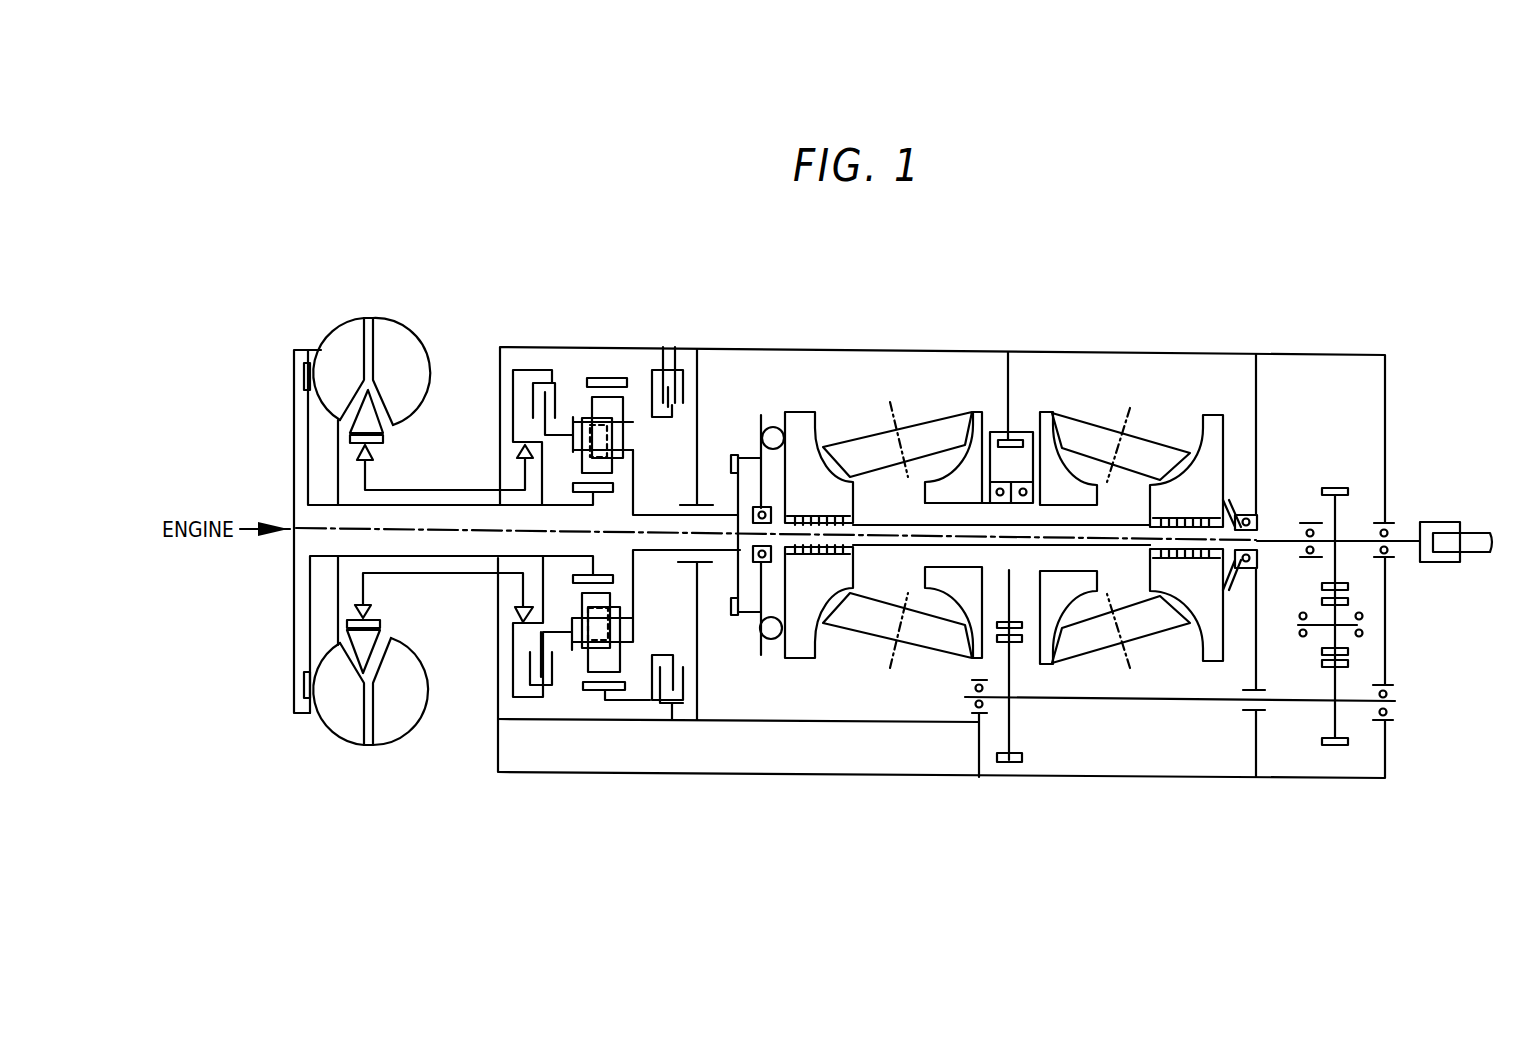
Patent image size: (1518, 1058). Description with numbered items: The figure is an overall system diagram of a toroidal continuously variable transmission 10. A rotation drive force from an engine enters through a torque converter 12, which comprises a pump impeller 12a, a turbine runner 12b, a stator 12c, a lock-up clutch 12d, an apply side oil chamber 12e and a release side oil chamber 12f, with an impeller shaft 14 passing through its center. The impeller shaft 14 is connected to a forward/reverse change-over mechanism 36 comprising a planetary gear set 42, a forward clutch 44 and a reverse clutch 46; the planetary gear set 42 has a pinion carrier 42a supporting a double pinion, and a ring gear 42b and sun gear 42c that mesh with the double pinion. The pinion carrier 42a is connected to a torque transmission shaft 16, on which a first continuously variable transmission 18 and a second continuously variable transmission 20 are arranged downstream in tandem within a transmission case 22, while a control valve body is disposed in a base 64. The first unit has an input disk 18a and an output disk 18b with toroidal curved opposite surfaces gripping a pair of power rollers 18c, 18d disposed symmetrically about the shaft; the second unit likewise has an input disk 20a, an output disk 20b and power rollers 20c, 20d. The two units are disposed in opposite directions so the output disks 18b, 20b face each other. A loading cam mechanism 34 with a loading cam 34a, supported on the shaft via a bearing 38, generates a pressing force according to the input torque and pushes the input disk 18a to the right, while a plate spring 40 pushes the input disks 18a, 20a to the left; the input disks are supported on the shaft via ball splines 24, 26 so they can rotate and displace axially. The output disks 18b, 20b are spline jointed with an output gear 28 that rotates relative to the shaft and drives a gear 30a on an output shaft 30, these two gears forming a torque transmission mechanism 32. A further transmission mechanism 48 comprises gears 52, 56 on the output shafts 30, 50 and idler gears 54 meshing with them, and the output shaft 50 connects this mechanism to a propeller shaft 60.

The toroidal continuously variable transmission 10 is at (977, 333).
The torque converter 12 is at (355, 305).
The pump impeller 12a is at (402, 353).
The turbine runner 12b is at (347, 350).
The stator 12c is at (377, 426).
The lock-up clutch 12d is at (308, 415).
The apply side oil chamber 12e is at (323, 630).
The release side oil chamber 12f is at (293, 458).
The impeller shaft 14 is at (462, 558).
The torque transmission shaft 16 is at (895, 555).
The first continuously variable transmission 18 is at (825, 400).
The input disk 18a is at (802, 408).
The output disk 18b is at (976, 410).
The power roller 18c is at (936, 418).
The power roller 18d is at (938, 662).
The second continuously variable transmission 20 is at (1118, 388).
The input disk 20a is at (1223, 420).
The output disk 20b is at (1046, 410).
The power roller 20c is at (1150, 420).
The power roller 20d is at (1083, 653).
The transmission case 22 is at (697, 722).
The ball spline 24 is at (848, 590).
The ball spline 26 is at (1143, 560).
The output gear 28 is at (998, 430).
The output shaft 30 is at (1220, 703).
The gear 30a is at (1005, 763).
The torque transmission mechanism 32 is at (1025, 665).
The loading cam mechanism 34 is at (734, 435).
The loading cam 34a is at (757, 432).
The forward/reverse change-over mechanism 36 is at (566, 380).
The bearing 38 is at (758, 615).
The plate spring 40 is at (1230, 510).
The planetary gear set 42 is at (626, 565).
The pinion carrier 42a is at (629, 637).
The ring gear 42b is at (598, 376).
The sun gear 42c is at (686, 546).
The forward clutch 44 is at (535, 360).
The reverse clutch 46 is at (665, 372).
The transmission mechanism 48 is at (1360, 574).
The output shaft 50 is at (1405, 538).
The gear 52 is at (1347, 740).
The idler gear 54 is at (1347, 650).
The gear 56 is at (1347, 487).
The propeller shaft 60 is at (1478, 533).
The base 64 is at (952, 753).